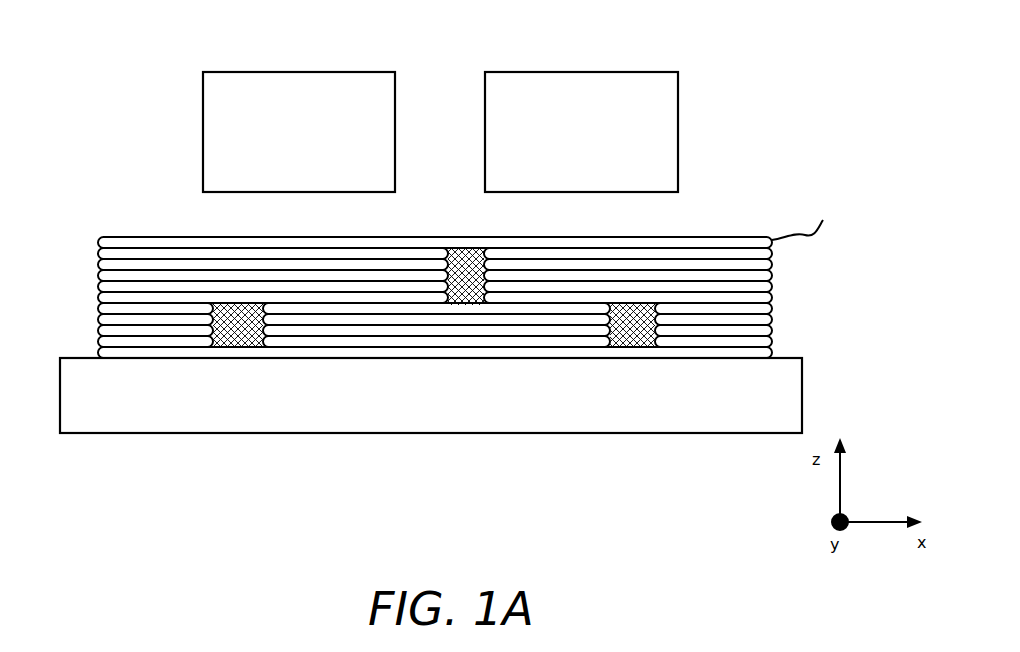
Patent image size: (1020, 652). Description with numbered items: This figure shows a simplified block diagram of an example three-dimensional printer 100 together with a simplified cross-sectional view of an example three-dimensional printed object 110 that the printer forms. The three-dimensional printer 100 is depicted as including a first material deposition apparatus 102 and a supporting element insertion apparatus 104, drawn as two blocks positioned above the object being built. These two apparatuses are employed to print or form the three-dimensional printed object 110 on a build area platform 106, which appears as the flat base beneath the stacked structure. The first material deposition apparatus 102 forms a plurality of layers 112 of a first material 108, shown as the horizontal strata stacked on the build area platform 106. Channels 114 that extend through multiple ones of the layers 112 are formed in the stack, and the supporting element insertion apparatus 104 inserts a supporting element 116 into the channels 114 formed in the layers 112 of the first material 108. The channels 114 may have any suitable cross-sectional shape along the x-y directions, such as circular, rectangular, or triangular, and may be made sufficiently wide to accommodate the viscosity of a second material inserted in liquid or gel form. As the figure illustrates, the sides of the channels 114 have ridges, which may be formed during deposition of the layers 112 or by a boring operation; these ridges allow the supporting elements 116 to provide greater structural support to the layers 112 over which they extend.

The three-dimensional (3D) printer 100 is at (463, 33).
The first material deposition apparatus 102 is at (319, 142).
The supporting element insertion apparatus 104 is at (602, 142).
The build area platform 106 is at (207, 434).
The first material 108 is at (396, 371).
The 3D printed object 110 is at (433, 323).
The layers 112 is at (809, 217).
The channels 114 is at (470, 305).
The supporting element 116 is at (457, 305).